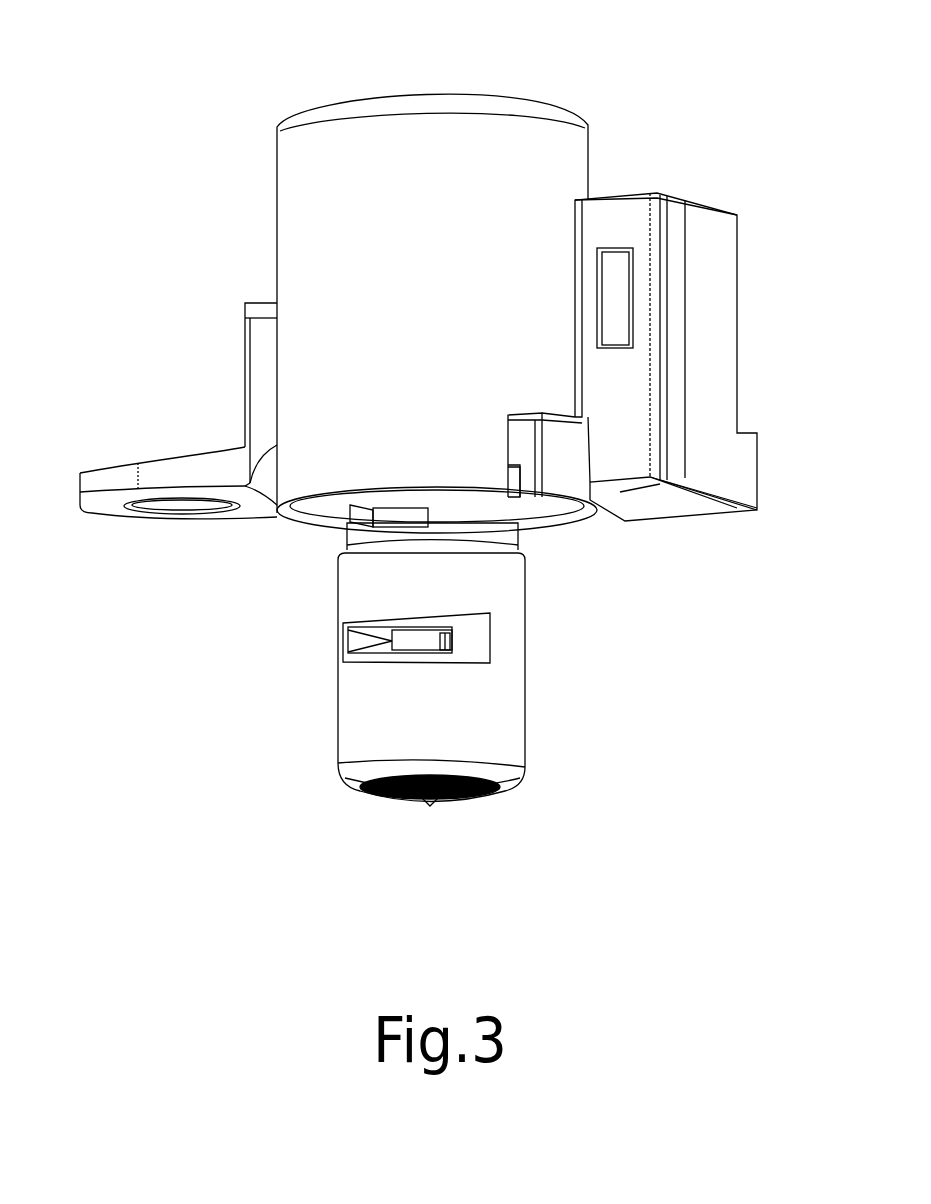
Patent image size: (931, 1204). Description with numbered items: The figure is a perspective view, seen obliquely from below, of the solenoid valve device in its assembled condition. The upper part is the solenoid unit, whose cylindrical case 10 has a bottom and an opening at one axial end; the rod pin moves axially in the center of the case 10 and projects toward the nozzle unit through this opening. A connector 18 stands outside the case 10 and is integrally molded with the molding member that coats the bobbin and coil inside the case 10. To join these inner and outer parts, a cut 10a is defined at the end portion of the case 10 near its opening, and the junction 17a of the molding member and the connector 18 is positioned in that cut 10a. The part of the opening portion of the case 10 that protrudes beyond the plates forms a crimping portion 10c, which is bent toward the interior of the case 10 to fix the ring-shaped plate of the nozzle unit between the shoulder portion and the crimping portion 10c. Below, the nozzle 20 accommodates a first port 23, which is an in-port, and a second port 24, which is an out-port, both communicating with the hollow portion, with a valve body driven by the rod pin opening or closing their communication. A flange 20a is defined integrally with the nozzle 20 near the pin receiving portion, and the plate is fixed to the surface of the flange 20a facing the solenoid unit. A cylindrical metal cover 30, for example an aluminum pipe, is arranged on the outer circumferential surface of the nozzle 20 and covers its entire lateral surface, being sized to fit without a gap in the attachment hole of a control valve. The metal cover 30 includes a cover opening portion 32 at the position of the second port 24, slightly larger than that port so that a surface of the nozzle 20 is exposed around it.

The case 10 is at (362, 167).
The cut 10a is at (515, 410).
The crimping portion 10c is at (282, 520).
The junction 17a is at (530, 452).
The connector 18 is at (698, 238).
The nozzle 20 is at (513, 540).
The flange 20a is at (347, 527).
The first port 23 is at (468, 800).
The second port 24 is at (392, 641).
The metal cover 30 is at (510, 720).
The cover opening portion 32 is at (345, 662).